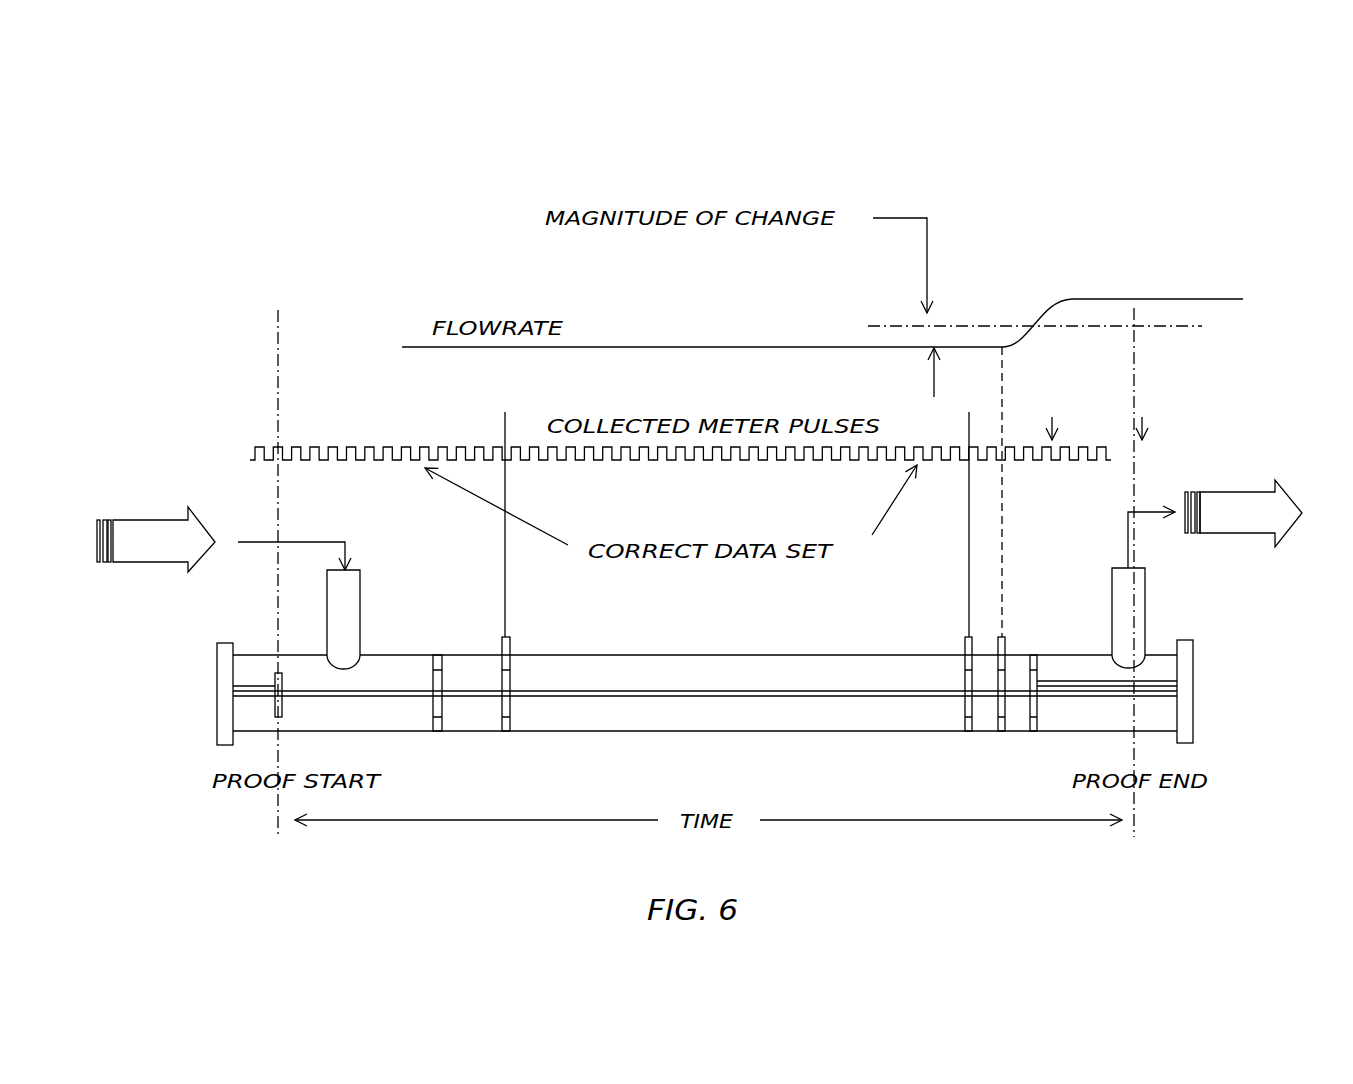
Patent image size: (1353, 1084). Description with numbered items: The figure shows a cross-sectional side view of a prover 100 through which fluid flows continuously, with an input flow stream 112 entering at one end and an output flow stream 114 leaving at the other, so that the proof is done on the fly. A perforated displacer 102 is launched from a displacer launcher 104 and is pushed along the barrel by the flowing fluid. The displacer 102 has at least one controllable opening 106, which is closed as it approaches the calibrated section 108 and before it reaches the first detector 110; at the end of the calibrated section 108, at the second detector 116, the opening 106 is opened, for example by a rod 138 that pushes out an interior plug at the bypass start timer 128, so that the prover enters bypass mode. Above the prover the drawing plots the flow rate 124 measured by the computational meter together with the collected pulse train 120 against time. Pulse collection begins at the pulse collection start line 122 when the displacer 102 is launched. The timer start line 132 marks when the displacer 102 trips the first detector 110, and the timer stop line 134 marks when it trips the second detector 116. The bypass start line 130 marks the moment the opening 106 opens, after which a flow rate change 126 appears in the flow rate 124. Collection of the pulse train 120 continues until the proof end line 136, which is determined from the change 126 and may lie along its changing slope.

The prover 100 is at (238, 215).
The perforated displacer 102 is at (438, 728).
The displacer launcher 104 is at (255, 670).
The controllable opening 106 is at (438, 680).
The calibrated section 108 is at (767, 733).
The first detector 110 is at (508, 643).
The input flow stream 112 is at (135, 518).
The output flow stream 114 is at (1230, 533).
The second detector 116 is at (965, 650).
The pulse train 120 is at (337, 445).
The pulse collection start line 122 is at (280, 337).
The flow rate 124 is at (655, 347).
The flow rate change 126 is at (1020, 305).
The bypass start timer 128 is at (1005, 640).
The bypass start line 130 is at (1003, 562).
The timer start line 132 is at (505, 560).
The timer stop line 134 is at (968, 640).
The proof end line 136 is at (1135, 488).
The rod 138 is at (1075, 702).